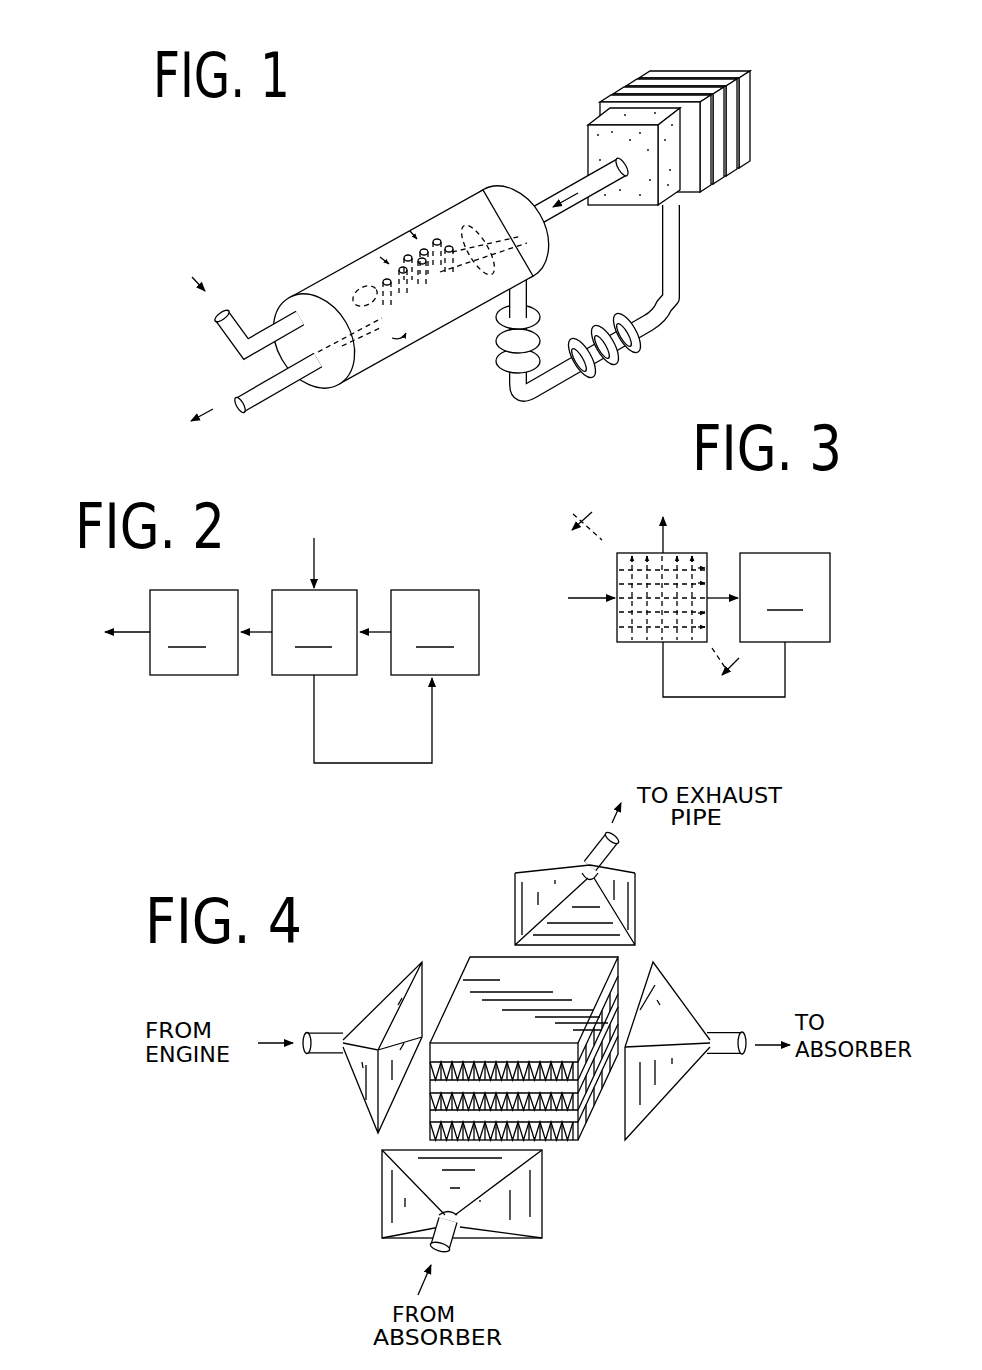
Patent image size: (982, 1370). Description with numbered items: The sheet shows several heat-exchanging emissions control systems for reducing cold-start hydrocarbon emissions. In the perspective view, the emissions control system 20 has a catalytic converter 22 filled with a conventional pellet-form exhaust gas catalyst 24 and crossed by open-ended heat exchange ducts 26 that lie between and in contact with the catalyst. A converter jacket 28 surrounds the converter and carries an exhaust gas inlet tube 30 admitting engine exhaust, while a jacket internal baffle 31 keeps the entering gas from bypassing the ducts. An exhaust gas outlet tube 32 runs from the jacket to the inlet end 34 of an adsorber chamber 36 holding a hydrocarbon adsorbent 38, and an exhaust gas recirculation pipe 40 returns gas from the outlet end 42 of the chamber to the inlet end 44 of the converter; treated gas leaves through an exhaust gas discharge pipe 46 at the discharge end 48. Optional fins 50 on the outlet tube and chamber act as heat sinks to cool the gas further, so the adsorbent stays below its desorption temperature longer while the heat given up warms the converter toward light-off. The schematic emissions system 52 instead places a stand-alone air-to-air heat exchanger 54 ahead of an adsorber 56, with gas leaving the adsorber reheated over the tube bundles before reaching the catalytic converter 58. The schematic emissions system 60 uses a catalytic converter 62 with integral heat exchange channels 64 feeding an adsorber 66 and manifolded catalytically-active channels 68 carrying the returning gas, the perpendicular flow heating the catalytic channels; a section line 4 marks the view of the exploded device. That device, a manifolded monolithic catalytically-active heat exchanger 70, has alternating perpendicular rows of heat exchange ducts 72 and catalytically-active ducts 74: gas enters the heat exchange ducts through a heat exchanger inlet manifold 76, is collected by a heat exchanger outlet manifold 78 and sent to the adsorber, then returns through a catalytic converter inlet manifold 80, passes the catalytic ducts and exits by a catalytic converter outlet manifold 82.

In FIG. 1, the emissions control system 20 is at (391, 225).
In FIG. 1, the catalytic converter 22 is at (447, 235).
In FIG. 1, the exhaust gas catalyst 24 is at (428, 306).
In FIG. 1, the heat exchange ducts 26 is at (386, 280).
In FIG. 1, the converter jacket 28 is at (478, 190).
In FIG. 1, the exhaust gas inlet tube 30 is at (212, 339).
In FIG. 1, the jacket internal baffle 31 is at (341, 350).
In FIG. 1, the exhaust gas outlet tube 32 is at (676, 308).
In FIG. 1, the inlet end of adsorber chamber 34 is at (692, 221).
In FIG. 1, the adsorber chamber 36 is at (662, 78).
In FIG. 1, the hydrocarbon adsorbent 38 is at (737, 122).
In FIG. 1, the exhaust gas recirculation pipe 40 is at (540, 193).
In FIG. 1, the outlet end of adsorber chamber 42 is at (567, 134).
In FIG. 1, the inlet end of catalytic converter 44 is at (503, 240).
In FIG. 1, the exhaust gas discharge pipe 46 is at (258, 396).
In FIG. 1, the discharge end of catalytic converter 48 is at (378, 349).
In FIG. 1, the fins 50 is at (539, 322).
In FIG. 2, the emissions system 52 is at (338, 576).
In FIG. 2, the air-to-air heat exchanger 54 is at (314, 632).
In FIG. 2, the adsorber 56 is at (435, 632).
In FIG. 2, the catalytic converter 58 is at (194, 632).
In FIG. 3, the emissions system 60 is at (759, 535).
In FIG. 3, the catalytic converter 62 is at (622, 643).
In FIG. 3, the heat exchange channels 64 is at (617, 627).
In FIG. 3, the adsorber 66 is at (785, 597).
In FIG. 3, the catalytically-active channels 68 is at (692, 557).
In FIG. 3, the section line 4 is at (663, 584).
In FIG. 4, the manifolded monolithic catalytically-active heat exchanger 70 is at (672, 1133).
In FIG. 4, the heat exchange ducts 72 is at (606, 1012).
In FIG. 4, the catalytically-active ducts 74 is at (473, 1065).
In FIG. 4, the heat exchanger inlet manifold 76 is at (333, 1031).
In FIG. 4, the heat exchanger outlet manifold 78 is at (698, 1005).
In FIG. 4, the catalytic converter inlet manifold 80 is at (524, 1200).
In FIG. 4, the catalytic converter outlet manifold 82 is at (636, 908).